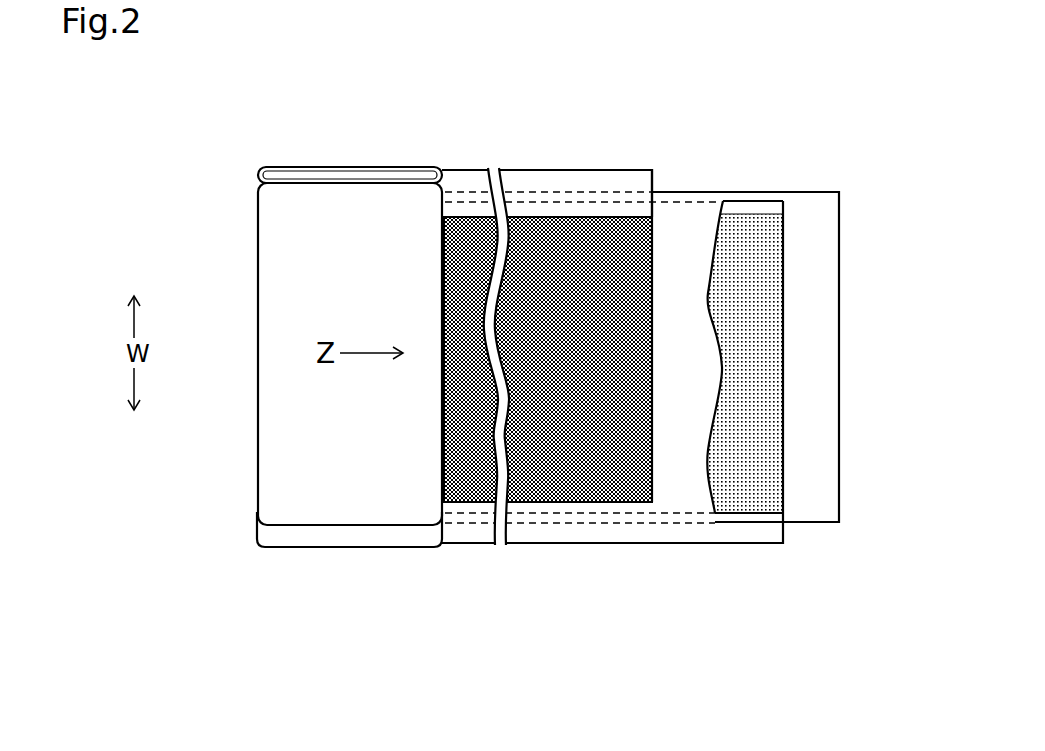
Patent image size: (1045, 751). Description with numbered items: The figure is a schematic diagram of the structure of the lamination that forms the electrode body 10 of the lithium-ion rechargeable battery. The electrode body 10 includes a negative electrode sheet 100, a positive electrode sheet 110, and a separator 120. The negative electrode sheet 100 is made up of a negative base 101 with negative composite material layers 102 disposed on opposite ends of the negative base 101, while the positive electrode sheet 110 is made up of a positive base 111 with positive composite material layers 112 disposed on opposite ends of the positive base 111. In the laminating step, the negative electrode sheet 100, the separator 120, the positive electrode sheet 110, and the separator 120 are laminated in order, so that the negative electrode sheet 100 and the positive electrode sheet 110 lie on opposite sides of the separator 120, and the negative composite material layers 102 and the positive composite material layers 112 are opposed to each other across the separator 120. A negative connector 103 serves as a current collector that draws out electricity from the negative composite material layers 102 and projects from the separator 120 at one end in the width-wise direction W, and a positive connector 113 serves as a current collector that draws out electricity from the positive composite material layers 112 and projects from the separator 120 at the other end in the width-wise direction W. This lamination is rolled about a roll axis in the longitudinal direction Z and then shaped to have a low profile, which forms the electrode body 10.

The electrode body 10 is at (257, 204).
The negative electrode sheet 100 is at (612, 413).
The negative base 101 is at (682, 545).
The negative composite material layers 102 is at (748, 505).
The negative connector 103 is at (622, 533).
The positive electrode sheet 110 is at (556, 279).
The positive base 111 is at (523, 170).
The positive composite material layers 112 is at (564, 220).
The positive connector 113 is at (614, 164).
The separator 120 is at (687, 206).